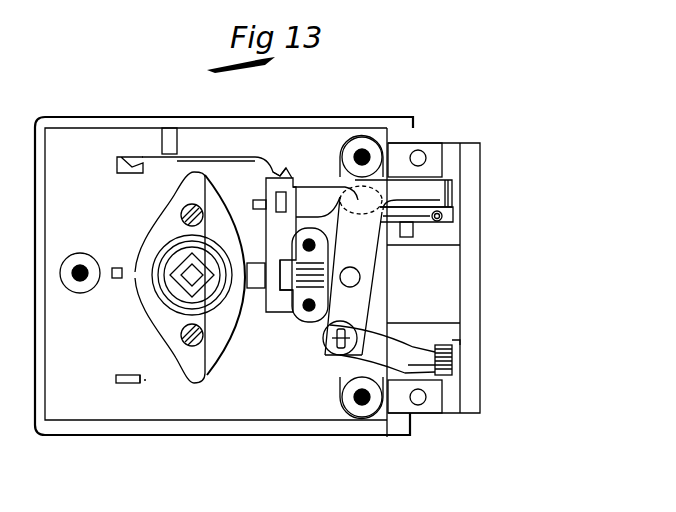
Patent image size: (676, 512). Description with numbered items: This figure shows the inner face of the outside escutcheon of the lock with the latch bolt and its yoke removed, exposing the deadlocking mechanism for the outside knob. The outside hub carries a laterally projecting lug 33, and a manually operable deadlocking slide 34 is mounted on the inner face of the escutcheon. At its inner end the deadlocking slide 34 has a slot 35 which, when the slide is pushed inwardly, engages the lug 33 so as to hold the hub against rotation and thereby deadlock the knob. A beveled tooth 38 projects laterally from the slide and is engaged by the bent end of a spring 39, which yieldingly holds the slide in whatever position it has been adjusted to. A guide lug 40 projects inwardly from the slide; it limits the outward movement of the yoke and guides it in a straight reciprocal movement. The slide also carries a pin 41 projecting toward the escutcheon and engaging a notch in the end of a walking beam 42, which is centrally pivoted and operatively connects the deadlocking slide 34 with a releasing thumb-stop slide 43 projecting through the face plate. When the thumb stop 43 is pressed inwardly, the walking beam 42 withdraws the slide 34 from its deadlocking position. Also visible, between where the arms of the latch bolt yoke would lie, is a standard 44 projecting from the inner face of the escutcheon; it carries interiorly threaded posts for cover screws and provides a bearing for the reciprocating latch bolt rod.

The lug 33 is at (252, 284).
The deadlocking slide 34 is at (392, 187).
The slot 35 is at (272, 275).
The beveled tooth 38 is at (284, 170).
The spring 39 is at (243, 157).
The guide lug 40 is at (278, 190).
The pin 41 is at (358, 200).
The walking beam 42 is at (357, 245).
The releasing thumb-stop slide 43 is at (445, 366).
The standard 44 is at (312, 318).